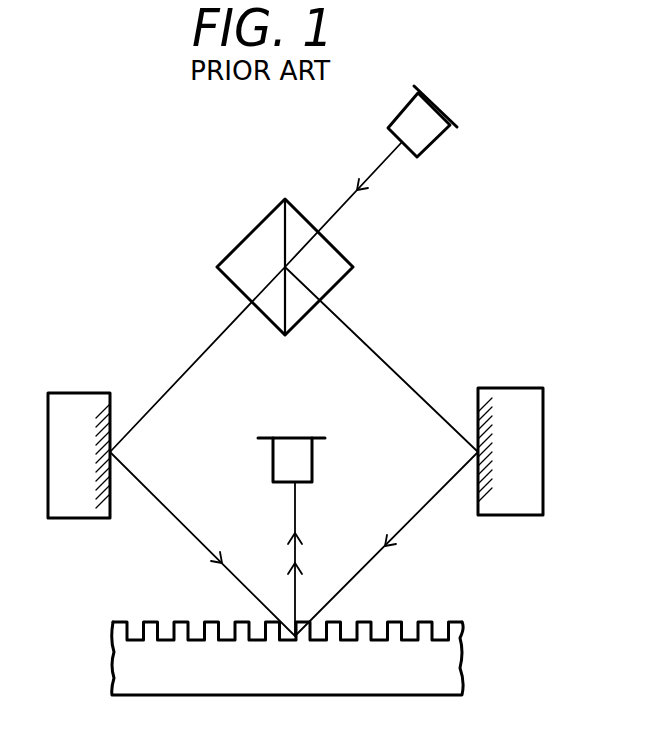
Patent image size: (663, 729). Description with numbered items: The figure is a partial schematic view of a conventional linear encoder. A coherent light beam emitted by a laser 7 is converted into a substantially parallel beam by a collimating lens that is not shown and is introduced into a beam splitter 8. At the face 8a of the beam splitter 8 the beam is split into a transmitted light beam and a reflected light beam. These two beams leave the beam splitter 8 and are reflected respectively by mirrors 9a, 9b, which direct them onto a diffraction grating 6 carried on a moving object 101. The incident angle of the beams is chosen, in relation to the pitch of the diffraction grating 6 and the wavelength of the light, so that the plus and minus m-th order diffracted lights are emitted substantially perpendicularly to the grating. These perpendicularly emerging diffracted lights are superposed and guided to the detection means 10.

The diffraction grating 6 is at (438, 626).
The laser 7 is at (428, 130).
The beam splitter 8 is at (253, 242).
The face 8a is at (290, 232).
The mirror 9a is at (92, 420).
The mirror 9b is at (522, 398).
The detection means 10 is at (300, 461).
The moving object 101 is at (456, 673).